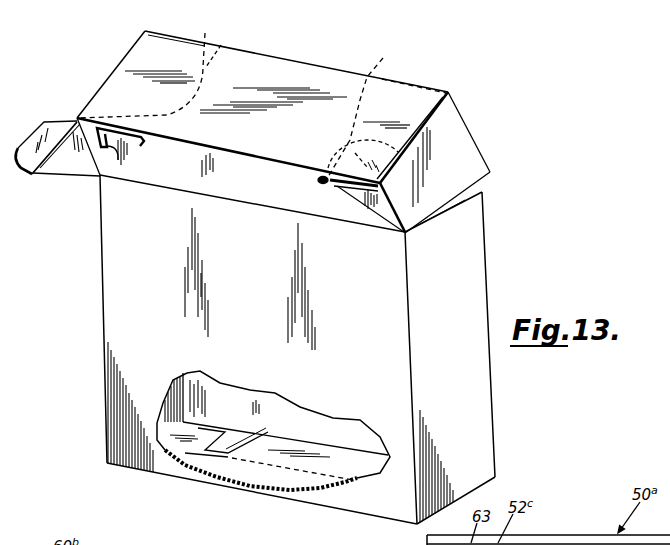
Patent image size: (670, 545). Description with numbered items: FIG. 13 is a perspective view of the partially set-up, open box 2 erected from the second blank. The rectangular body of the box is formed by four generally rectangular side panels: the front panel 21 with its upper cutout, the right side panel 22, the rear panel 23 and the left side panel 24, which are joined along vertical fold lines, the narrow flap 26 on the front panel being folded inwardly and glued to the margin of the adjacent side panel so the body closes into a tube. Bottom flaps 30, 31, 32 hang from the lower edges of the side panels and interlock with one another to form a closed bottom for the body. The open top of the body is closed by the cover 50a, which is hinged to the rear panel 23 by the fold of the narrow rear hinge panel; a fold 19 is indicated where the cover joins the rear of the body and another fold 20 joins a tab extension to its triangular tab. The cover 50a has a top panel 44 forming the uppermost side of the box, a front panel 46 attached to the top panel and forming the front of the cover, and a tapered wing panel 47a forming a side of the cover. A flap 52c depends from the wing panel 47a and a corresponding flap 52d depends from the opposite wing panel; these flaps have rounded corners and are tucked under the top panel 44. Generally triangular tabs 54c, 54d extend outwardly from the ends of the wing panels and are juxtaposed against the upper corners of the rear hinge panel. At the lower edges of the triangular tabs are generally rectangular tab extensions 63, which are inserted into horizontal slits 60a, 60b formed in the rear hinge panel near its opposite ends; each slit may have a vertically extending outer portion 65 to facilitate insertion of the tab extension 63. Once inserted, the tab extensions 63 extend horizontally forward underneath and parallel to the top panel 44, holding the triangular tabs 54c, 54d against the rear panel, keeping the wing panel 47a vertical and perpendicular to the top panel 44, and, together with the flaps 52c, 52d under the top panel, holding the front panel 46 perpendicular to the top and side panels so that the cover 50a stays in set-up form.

The box 2 is at (408, 500).
The front flap 19 is at (272, 208).
The end flap 20 is at (58, 168).
The front panel 21 is at (293, 412).
The right side panel 22 is at (477, 288).
The rear panel 23 is at (110, 292).
The left side panel 24 is at (147, 423).
The narrow flap 26 is at (187, 373).
The bottom flap 30 is at (283, 478).
The bottom flap 31 is at (234, 442).
The bottom flap 32 is at (195, 454).
The top panel 44 is at (285, 75).
The front panel of cover 46 is at (546, 543).
The tapered wing panel 47a is at (468, 158).
The cover 50a is at (470, 121).
The flap 52c is at (387, 108).
The flap 52d is at (162, 65).
The triangular tab 54c is at (388, 212).
The triangular tab 54d is at (85, 165).
The slit 60a is at (343, 186).
The slit 60b is at (141, 150).
The tab extension 63 is at (412, 147).
The vertically extending outer portion 65 is at (109, 150).